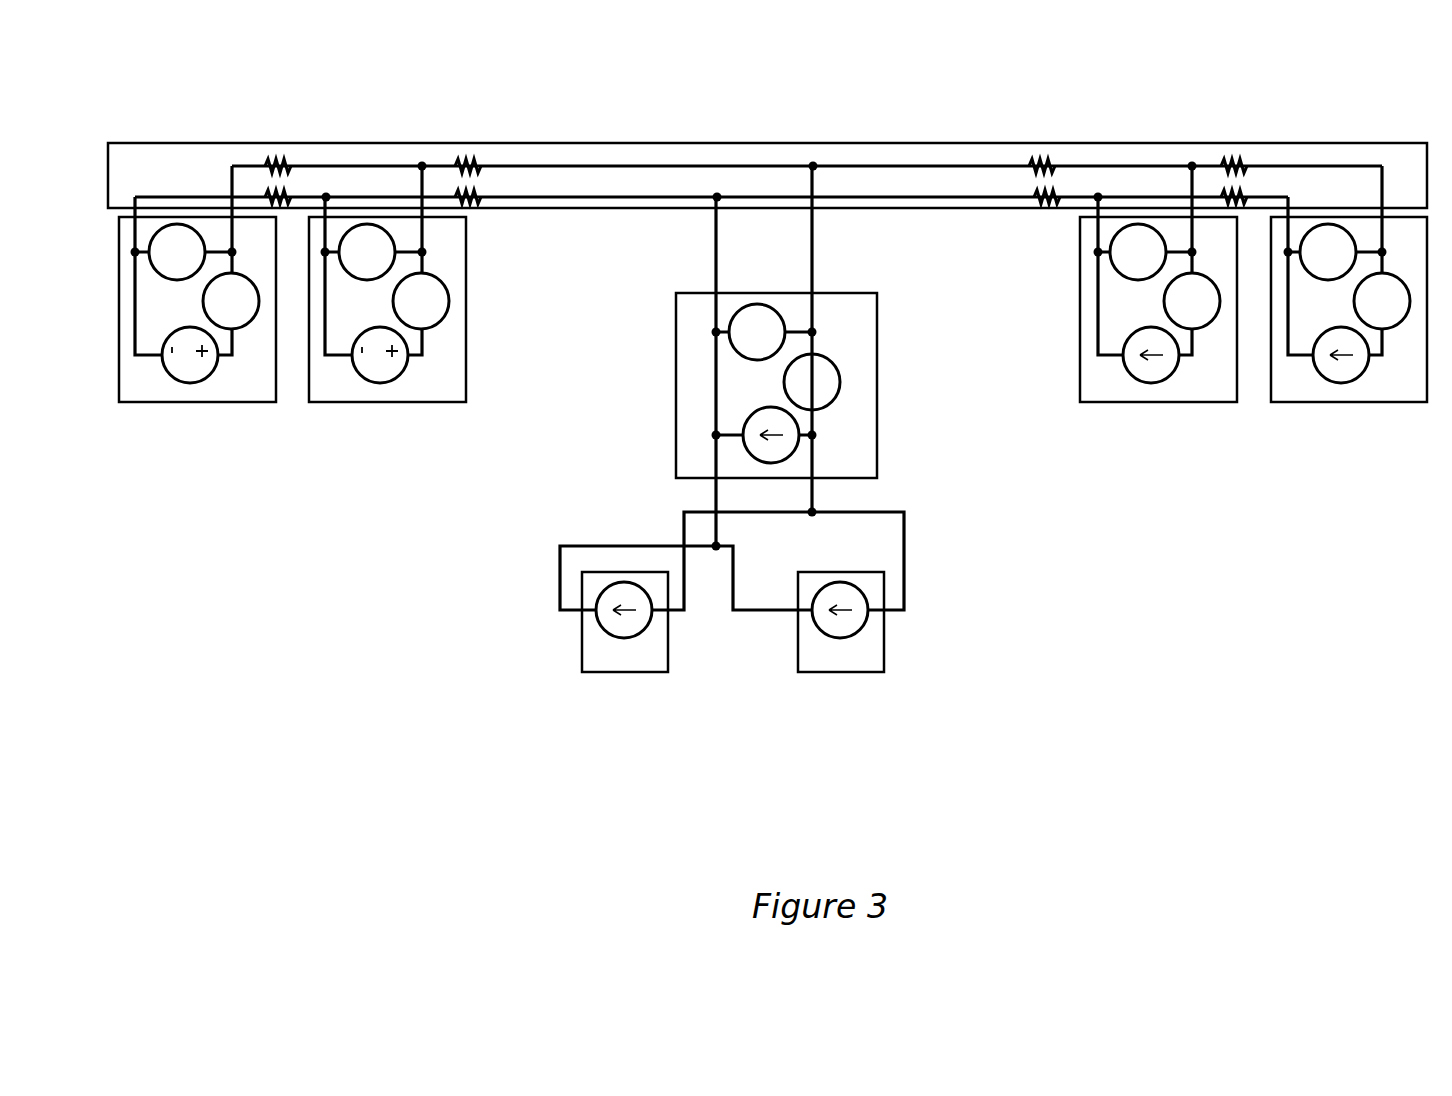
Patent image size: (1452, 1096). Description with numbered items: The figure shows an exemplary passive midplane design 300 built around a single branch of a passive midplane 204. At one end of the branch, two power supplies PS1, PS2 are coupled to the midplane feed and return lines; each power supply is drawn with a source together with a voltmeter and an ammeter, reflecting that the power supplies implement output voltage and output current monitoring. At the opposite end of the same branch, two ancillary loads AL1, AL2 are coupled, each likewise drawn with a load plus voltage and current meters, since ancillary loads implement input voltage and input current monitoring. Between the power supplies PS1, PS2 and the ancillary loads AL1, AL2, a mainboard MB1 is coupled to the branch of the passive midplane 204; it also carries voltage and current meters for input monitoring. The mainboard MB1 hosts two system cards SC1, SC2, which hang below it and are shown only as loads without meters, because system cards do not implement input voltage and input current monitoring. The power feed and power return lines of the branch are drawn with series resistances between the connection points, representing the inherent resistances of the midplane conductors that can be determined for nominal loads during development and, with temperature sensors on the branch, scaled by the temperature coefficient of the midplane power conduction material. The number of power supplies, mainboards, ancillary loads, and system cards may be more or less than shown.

The passive midplane design 300 is at (845, 41).
The passive midplane 204 is at (200, 178).
The power supply PS1 is at (197, 284).
The power supply PS2 is at (387, 284).
The ancillary load AL1 is at (1158, 284).
The ancillary load AL2 is at (1349, 284).
The mainboard MB1 is at (776, 358).
The system card SC1 is at (625, 622).
The system card SC2 is at (841, 622).